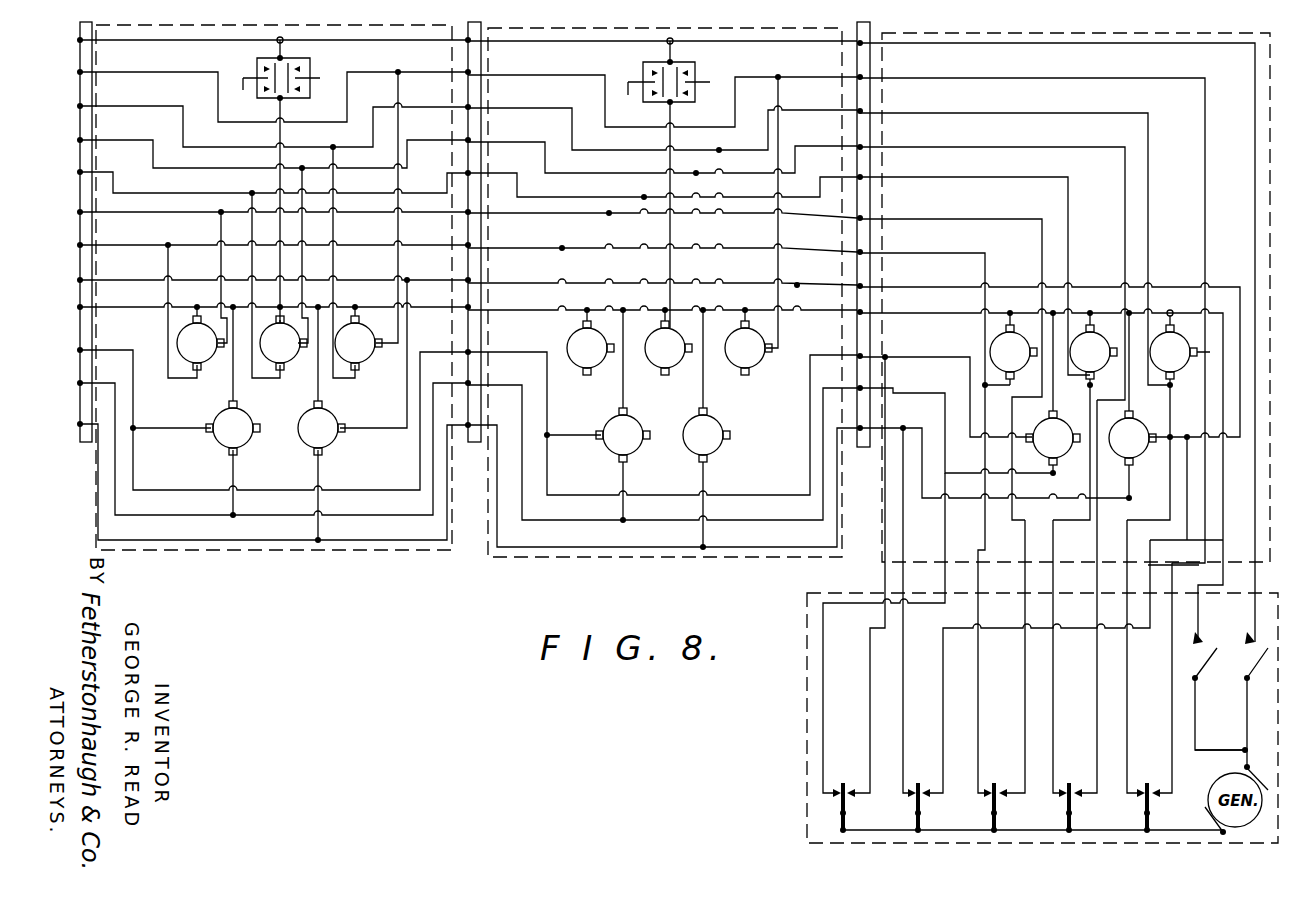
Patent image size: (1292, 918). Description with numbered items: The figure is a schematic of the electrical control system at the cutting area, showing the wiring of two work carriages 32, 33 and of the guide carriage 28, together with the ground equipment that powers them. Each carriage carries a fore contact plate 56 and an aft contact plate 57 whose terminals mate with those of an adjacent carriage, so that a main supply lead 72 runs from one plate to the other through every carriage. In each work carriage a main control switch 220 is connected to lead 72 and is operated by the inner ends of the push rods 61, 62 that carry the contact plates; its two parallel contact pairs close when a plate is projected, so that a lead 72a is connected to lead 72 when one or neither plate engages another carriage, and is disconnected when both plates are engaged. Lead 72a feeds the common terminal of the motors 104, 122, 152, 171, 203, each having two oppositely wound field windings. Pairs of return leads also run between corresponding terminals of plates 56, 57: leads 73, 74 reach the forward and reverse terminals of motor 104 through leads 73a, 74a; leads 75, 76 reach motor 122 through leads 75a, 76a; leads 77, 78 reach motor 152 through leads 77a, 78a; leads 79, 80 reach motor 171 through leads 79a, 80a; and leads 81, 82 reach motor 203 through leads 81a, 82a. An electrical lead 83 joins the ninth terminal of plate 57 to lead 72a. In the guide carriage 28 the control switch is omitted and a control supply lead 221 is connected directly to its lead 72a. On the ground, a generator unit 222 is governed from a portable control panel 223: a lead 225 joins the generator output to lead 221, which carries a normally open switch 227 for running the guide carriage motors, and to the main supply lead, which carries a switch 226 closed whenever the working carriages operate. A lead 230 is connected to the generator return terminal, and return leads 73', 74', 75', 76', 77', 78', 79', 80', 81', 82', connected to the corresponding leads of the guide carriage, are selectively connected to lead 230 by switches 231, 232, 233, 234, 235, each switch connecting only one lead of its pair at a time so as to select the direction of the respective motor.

The guide carriage 28 is at (1160, 35).
The work carriage 32 is at (155, 30).
The work carriage 33 is at (580, 30).
The contact plate 56 is at (468, 57).
The contact plate 57 is at (92, 45).
The rod 61 is at (308, 76).
The rod 62 is at (429, 97).
The main supply lead 72 is at (396, 40).
The lead 72a is at (285, 105).
The lead 73 is at (642, 316).
The lead 73a is at (394, 145).
The lead 74 is at (625, 234).
The lead 74a is at (331, 260).
The lead 75 is at (602, 259).
The lead 75a is at (323, 228).
The lead 76 is at (585, 263).
The lead 76a is at (247, 208).
The lead 77 is at (561, 354).
The lead 77a is at (220, 235).
The lead 78 is at (549, 305).
The lead 78a is at (162, 258).
The lead 79 is at (660, 351).
The lead 79a is at (408, 310).
The lead 80 is at (606, 474).
The lead 80a is at (320, 470).
The lead 81 is at (556, 414).
The lead 81a is at (182, 420).
The lead 82 is at (568, 453).
The lead 82a is at (229, 488).
The electrical lead 83 is at (154, 308).
The motor 104 is at (363, 355).
The motor 122 is at (288, 355).
The motor 152 is at (205, 355).
The motor 171 is at (330, 440).
The motor 203 is at (243, 435).
The main control switch 220 is at (259, 54).
The control supply lead 221 is at (1212, 547).
The generator unit 222 is at (1229, 780).
The control panel 223 is at (795, 642).
The lead 225 is at (1222, 747).
The switch 226 is at (1246, 651).
The switch 227 is at (1238, 699).
The lead 230 is at (1204, 828).
The switch 231 is at (1138, 806).
The switch 232 is at (1062, 806).
The switch 233 is at (985, 806).
The switch 234 is at (910, 806).
The switch 235 is at (820, 799).
The return lead 73' is at (1155, 680).
The return lead 74' is at (1139, 658).
The return lead 75' is at (1079, 598).
The return lead 76' is at (1064, 658).
The return lead 77' is at (1007, 658).
The return lead 78' is at (989, 591).
The return lead 79' is at (1032, 668).
The return lead 80' is at (914, 612).
The return lead 81' is at (865, 577).
The return lead 82' is at (884, 635).